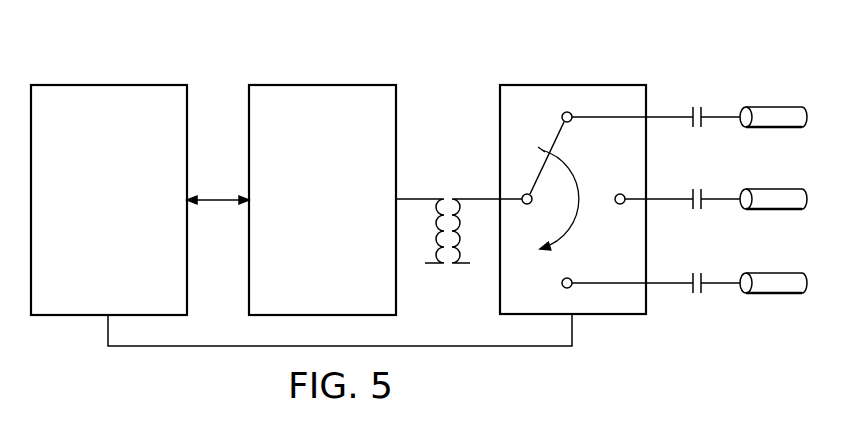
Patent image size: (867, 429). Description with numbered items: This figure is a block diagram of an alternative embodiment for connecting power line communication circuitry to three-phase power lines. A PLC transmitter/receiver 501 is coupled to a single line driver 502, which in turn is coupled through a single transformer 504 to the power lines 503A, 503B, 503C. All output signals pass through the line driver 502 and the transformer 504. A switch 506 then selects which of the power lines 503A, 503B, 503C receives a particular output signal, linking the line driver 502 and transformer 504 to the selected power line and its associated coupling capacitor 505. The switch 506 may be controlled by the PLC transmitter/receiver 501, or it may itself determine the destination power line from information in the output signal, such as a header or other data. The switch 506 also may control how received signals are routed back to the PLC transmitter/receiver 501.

The PLC transmitter/receiver 501 is at (88, 258).
The line driver 502 is at (342, 233).
The power line 503A is at (773, 106).
The power line 503B is at (773, 188).
The power line 503C is at (773, 295).
The transformer 504 is at (447, 198).
The coupling capacitor 505 is at (698, 107).
The switch 506 is at (584, 85).